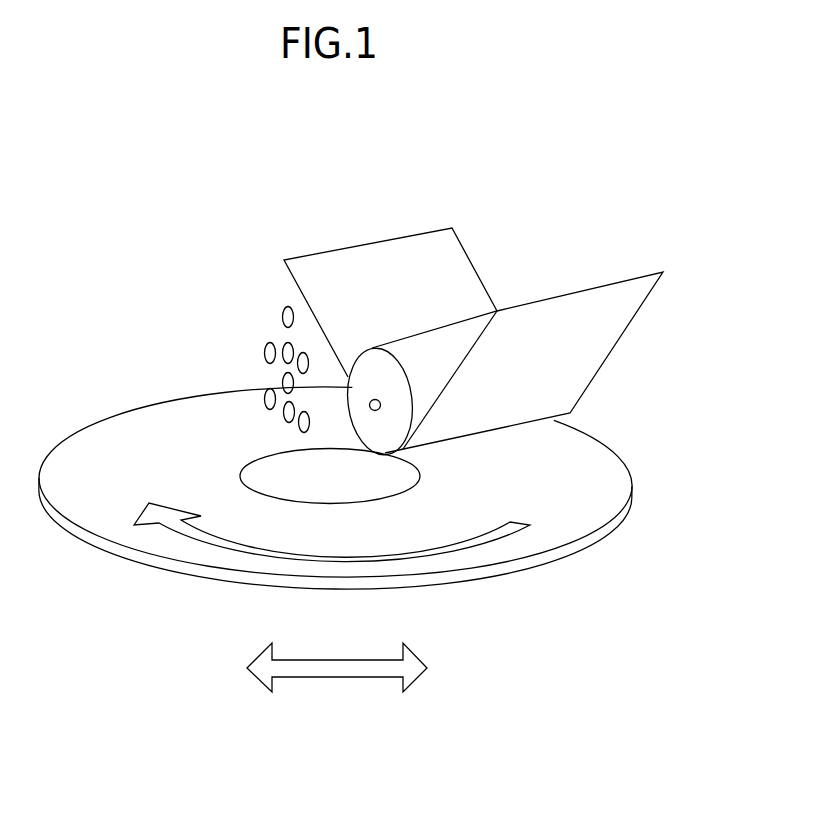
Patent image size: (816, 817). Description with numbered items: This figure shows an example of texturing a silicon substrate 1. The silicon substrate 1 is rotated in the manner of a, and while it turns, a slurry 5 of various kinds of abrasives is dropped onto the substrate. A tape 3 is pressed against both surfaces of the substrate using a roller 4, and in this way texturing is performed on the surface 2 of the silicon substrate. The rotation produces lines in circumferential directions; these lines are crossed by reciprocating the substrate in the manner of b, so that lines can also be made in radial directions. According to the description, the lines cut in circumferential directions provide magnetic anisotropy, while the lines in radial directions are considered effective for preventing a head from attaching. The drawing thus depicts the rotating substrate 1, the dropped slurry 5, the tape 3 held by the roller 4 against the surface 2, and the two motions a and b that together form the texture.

The silicon substrate 1 is at (627, 507).
The surface of the silicon substrate 2 is at (583, 443).
The tape 3 is at (610, 321).
The roller 4 is at (453, 344).
The slurry 5 is at (268, 355).
The rotating manner a is at (446, 554).
The reciprocating manner b is at (372, 672).